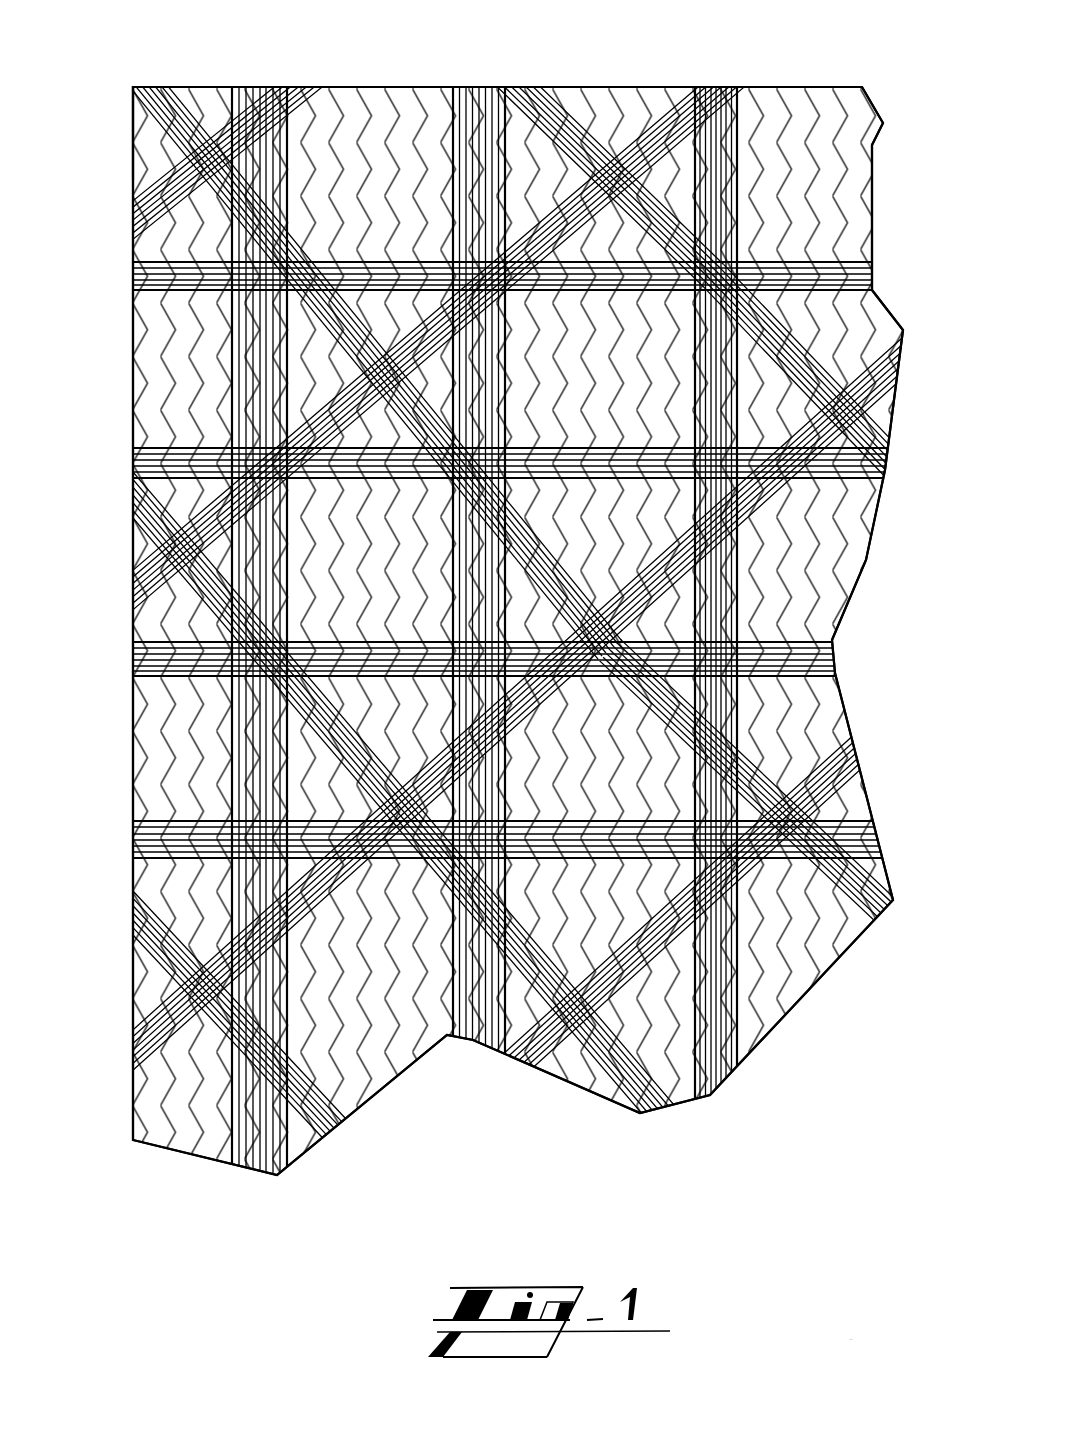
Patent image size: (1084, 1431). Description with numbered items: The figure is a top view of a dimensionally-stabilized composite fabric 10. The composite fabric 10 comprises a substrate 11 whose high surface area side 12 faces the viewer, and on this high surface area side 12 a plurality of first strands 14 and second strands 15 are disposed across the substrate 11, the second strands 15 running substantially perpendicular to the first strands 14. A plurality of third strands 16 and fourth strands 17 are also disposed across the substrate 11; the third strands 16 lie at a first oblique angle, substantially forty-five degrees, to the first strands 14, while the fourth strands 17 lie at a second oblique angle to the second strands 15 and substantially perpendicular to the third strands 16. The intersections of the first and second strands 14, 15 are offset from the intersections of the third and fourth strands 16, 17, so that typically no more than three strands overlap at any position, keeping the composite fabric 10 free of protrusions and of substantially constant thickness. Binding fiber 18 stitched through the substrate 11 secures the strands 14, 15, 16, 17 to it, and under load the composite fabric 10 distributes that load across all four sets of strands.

The composite fabric 10 is at (633, 37).
The substrate 11 is at (365, 85).
The high surface area side 12 is at (177, 86).
The first strands 14 is at (445, 125).
The second strands 15 is at (178, 266).
The third strands 16 is at (175, 168).
The fourth strands 17 is at (177, 230).
The binding fiber 18 is at (177, 368).